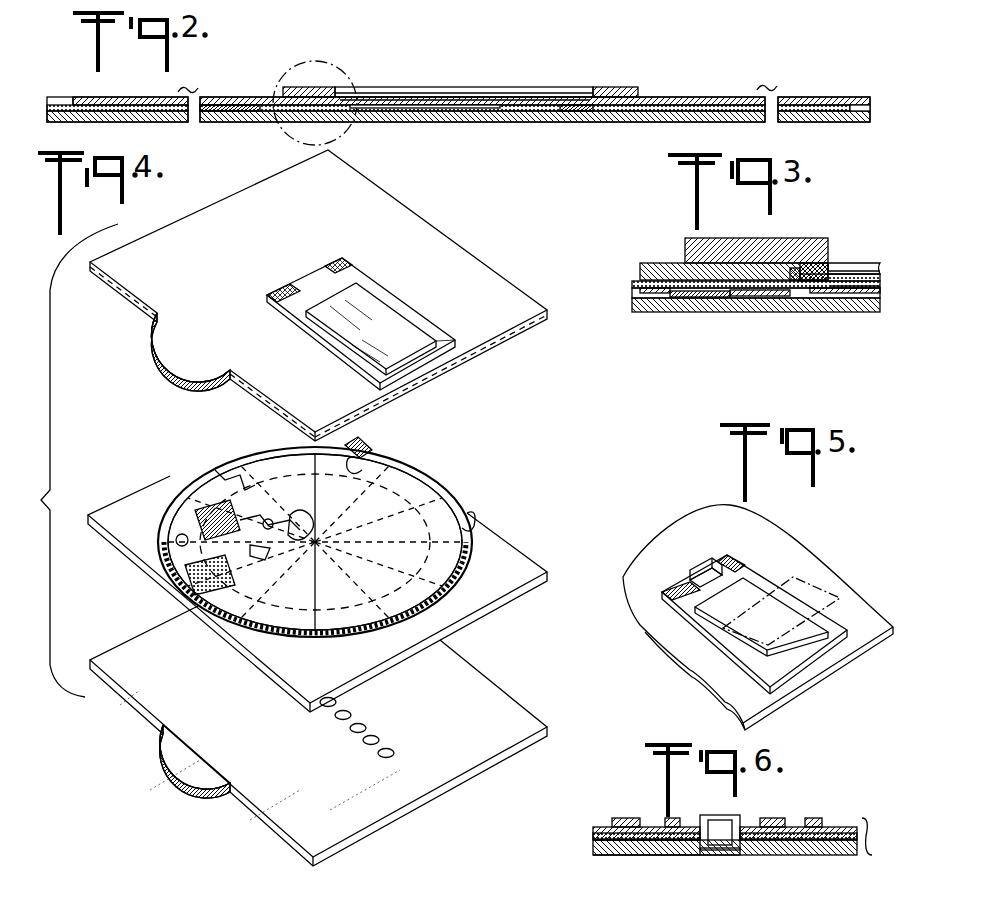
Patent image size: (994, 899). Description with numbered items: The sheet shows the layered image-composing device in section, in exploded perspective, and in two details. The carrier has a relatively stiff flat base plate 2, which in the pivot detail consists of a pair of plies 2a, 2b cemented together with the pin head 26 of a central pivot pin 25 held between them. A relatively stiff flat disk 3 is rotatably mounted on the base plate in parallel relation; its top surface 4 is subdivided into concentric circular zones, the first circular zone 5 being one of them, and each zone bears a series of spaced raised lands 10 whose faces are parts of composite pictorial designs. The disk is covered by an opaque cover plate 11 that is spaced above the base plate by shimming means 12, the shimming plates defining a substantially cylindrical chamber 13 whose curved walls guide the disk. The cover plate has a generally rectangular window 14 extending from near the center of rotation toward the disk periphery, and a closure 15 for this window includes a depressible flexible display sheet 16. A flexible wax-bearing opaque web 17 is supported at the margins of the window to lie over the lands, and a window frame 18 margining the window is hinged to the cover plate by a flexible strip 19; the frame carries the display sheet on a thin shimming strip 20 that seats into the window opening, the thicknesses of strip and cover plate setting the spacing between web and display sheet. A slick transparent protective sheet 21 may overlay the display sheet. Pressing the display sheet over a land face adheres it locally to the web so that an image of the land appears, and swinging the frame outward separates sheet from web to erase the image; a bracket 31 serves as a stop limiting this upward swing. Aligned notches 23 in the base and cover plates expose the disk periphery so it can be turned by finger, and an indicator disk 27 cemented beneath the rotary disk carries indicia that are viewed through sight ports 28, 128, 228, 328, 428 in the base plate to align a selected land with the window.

In FIG. 2, the base plate 2 is at (718, 122).
In FIG. 3, the base plate 2 is at (650, 312).
In FIG. 4, the base plate 2 is at (145, 690).
In FIG. 6, the base plate 2 is at (739, 834).
In FIG. 6, the ply 2a is at (596, 840).
In FIG. 6, the ply 2b is at (596, 851).
In FIG. 2, the disk 3 is at (205, 114).
In FIG. 3, the disk 3 is at (631, 292).
In FIG. 4, the disk 3 is at (418, 472).
In FIG. 6, the disk 3 is at (846, 833).
In FIG. 2, the top surface 4 is at (78, 98).
In FIG. 3, the top surface 4 is at (636, 282).
In FIG. 4, the top surface 4 is at (445, 515).
In FIG. 4, the circular zone 5 is at (372, 265).
In FIG. 2, the lands 10 is at (122, 104).
In FIG. 3, the lands 10 is at (692, 297).
In FIG. 4, the lands 10 is at (210, 500).
In FIG. 6, the lands 10 is at (640, 827).
In FIG. 2, the cover plate 11 is at (700, 104).
In FIG. 3, the cover plate 11 is at (672, 262).
In FIG. 4, the cover plate 11 is at (370, 170).
In FIG. 5, the cover plate 11 is at (690, 655).
In FIG. 4, the shimming means 12 is at (135, 545).
In FIG. 4, the cylindrical chamber 13 is at (362, 458).
In FIG. 2, the window 14 is at (590, 118).
In FIG. 3, the window 14 is at (800, 266).
In FIG. 2, the closure 15 is at (288, 88).
In FIG. 3, the closure 15 is at (725, 238).
In FIG. 2, the display sheet 16 is at (440, 96).
In FIG. 3, the display sheet 16 is at (879, 266).
In FIG. 4, the display sheet 16 is at (372, 330).
In FIG. 5, the display sheet 16 is at (765, 600).
In FIG. 2, the web 17 is at (497, 100).
In FIG. 3, the web 17 is at (832, 288).
In FIG. 2, the window frame 18 is at (612, 87).
In FIG. 3, the window frame 18 is at (812, 265).
In FIG. 4, the window frame 18 is at (445, 338).
In FIG. 5, the window frame 18 is at (790, 670).
In FIG. 5, the flexible strip 19 is at (665, 597).
In FIG. 3, the shimming strip 20 is at (836, 275).
In FIG. 2, the protective flexible sheet 21 is at (396, 93).
In FIG. 3, the protective flexible sheet 21 is at (860, 271).
In FIG. 4, the notches 23 is at (210, 328).
In FIG. 6, the central pivot pin 25 is at (736, 818).
In FIG. 6, the pin head 26 is at (735, 856).
In FIG. 4, the indicator disk 27 is at (430, 476).
In FIG. 6, the indicator disk 27 is at (598, 827).
In FIG. 4, the sight port 28 is at (336, 702).
In FIG. 4, the sight port 128 is at (351, 715).
In FIG. 4, the sight port 228 is at (366, 728).
In FIG. 4, the sight port 328 is at (363, 740).
In FIG. 4, the sight port 428 is at (394, 753).
In FIG. 5, the bracket 31 is at (695, 560).